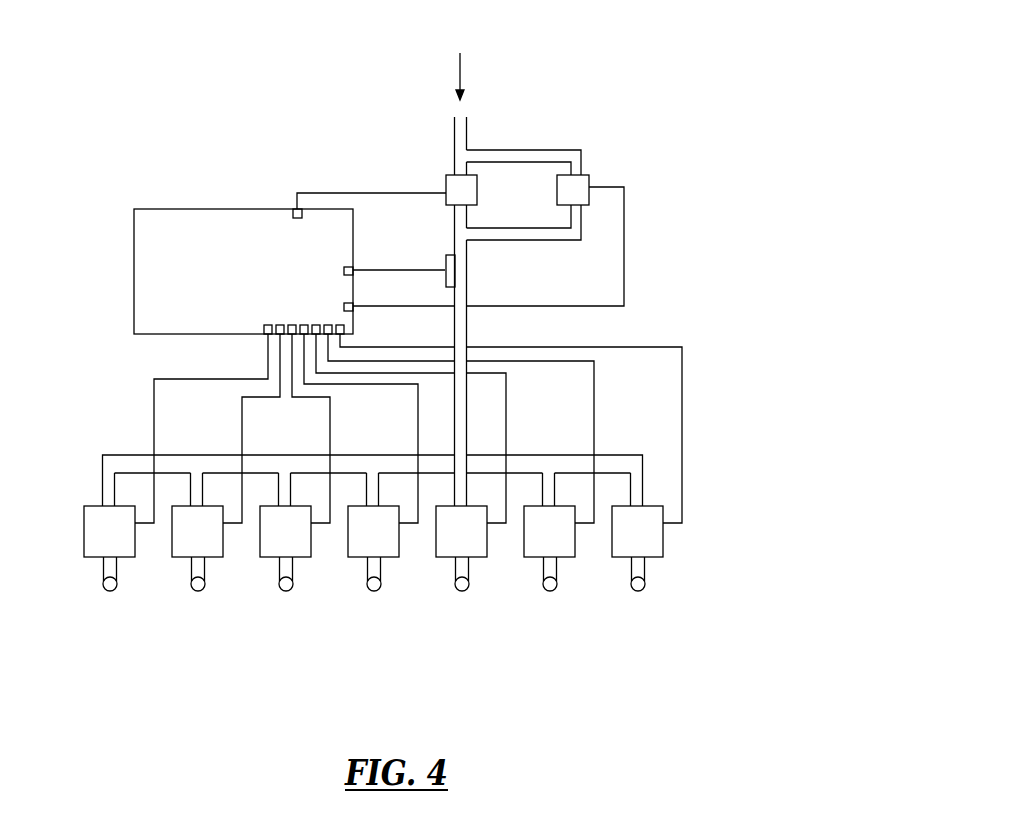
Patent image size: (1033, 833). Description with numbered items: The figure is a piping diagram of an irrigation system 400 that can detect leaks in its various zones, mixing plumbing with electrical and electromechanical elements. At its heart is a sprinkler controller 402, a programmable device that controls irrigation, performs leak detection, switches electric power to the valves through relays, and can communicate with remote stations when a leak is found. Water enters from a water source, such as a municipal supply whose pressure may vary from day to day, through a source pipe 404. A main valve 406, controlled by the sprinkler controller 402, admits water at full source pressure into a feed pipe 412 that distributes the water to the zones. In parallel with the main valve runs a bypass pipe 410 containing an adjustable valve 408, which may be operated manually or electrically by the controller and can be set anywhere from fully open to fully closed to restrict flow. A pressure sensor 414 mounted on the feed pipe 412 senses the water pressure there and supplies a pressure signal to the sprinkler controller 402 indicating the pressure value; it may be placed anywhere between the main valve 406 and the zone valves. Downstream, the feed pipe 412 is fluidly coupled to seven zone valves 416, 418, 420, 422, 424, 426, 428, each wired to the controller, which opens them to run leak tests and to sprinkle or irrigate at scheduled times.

The irrigation system 400 is at (712, 46).
The sprinkler controller 402 is at (222, 209).
The source pipe 404 is at (454, 130).
The main valve 406 is at (446, 182).
The adjustable valve 408 is at (588, 176).
The bypass pipe 410 is at (502, 149).
The feed pipe 412 is at (467, 268).
The pressure sensor 414 is at (445, 262).
The zone valve 416 is at (97, 558).
The zone valve 418 is at (185, 558).
The zone valve 420 is at (273, 558).
The zone valve 422 is at (361, 558).
The zone valve 424 is at (449, 558).
The zone valve 426 is at (537, 558).
The zone valve 428 is at (625, 558).